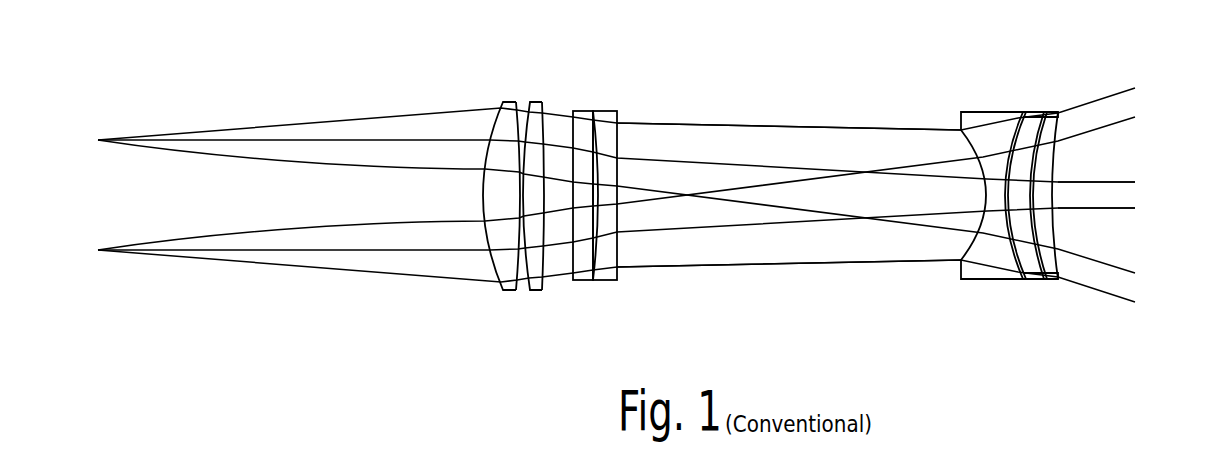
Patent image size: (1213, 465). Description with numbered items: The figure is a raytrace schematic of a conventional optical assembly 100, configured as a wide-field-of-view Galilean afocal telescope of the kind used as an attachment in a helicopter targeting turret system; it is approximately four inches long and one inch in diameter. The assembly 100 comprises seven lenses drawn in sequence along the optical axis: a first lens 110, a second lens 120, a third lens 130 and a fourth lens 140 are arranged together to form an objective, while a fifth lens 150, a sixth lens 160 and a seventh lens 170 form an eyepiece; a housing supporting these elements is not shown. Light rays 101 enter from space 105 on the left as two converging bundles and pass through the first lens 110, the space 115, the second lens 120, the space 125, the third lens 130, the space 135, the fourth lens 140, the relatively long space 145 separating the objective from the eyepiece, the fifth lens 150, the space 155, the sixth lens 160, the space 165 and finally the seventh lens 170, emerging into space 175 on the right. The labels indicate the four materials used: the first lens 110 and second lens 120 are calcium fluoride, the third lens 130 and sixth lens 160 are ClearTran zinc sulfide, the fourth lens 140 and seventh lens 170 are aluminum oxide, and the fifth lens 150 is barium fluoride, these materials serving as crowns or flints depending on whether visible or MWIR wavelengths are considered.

The conventional optical assembly 100 is at (100, 75).
The light rays 101 is at (305, 122).
The space 105 is at (292, 210).
The first lens 110 is at (511, 100).
The space 115 is at (521, 272).
The second lens 120 is at (537, 100).
The space 125 is at (558, 268).
The third lens 130 is at (580, 110).
The space 135 is at (596, 253).
The fourth lens 140 is at (605, 110).
The space 145 is at (800, 298).
The fifth lens 150 is at (978, 118).
The space 155 is at (1023, 280).
The sixth lens 160 is at (1035, 117).
The space 165 is at (1048, 280).
The seventh lens 170 is at (1055, 113).
The space 175 is at (1193, 208).